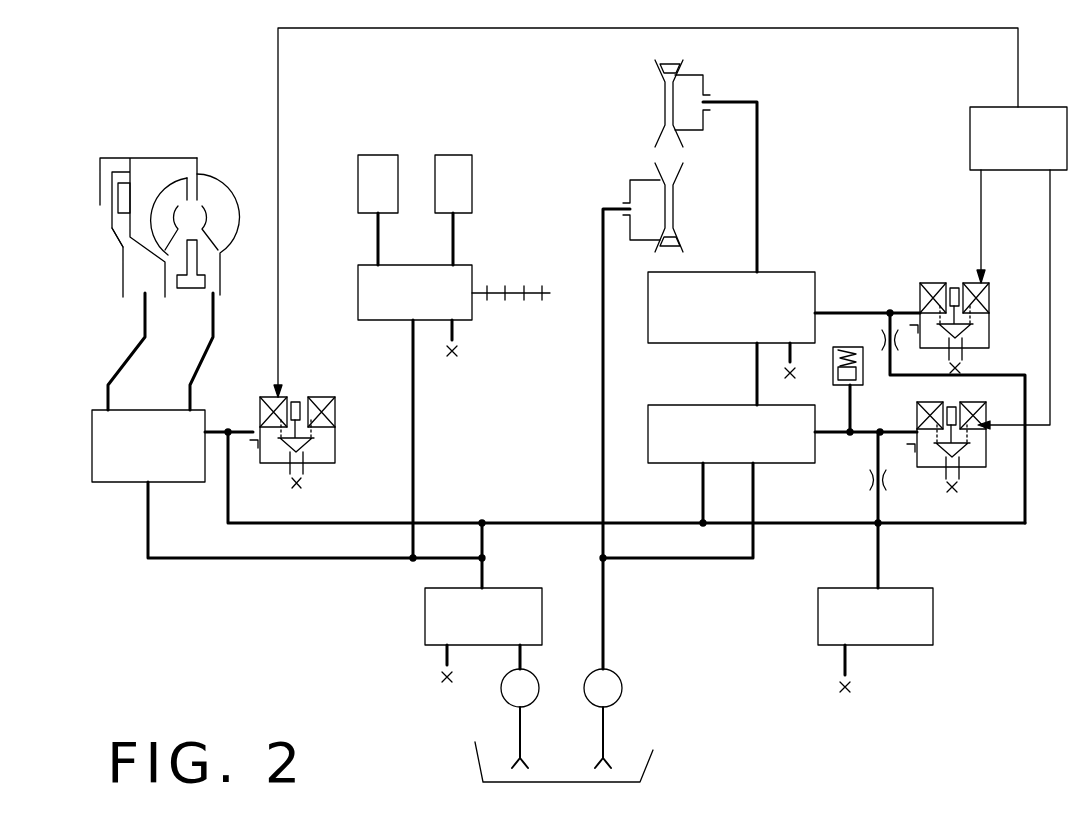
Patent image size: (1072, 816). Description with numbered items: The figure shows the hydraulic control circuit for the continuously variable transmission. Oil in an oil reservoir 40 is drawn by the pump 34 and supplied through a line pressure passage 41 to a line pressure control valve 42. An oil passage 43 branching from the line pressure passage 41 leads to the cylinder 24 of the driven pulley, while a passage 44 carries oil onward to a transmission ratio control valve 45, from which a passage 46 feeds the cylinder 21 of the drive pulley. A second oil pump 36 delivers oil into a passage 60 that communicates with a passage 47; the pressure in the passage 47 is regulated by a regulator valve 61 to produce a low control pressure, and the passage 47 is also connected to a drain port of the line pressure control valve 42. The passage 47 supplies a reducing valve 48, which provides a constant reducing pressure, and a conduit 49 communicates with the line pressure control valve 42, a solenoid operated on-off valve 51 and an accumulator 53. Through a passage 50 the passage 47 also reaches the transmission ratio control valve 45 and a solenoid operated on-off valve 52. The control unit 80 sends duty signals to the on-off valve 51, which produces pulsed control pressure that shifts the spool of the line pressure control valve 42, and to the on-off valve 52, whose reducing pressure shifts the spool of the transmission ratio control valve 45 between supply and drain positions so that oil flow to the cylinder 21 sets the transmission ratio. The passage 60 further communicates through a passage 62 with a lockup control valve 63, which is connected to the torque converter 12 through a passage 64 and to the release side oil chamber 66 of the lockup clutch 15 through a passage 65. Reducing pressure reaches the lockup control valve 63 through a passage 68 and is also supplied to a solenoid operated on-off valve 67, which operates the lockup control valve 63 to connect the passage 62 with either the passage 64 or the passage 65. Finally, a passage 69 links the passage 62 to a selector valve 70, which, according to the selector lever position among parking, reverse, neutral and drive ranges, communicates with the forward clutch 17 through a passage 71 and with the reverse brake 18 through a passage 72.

The torque converter 12 is at (230, 202).
The lockup clutch 15 is at (125, 183).
The forward clutch 17 is at (388, 155).
The reverse brake 18 is at (468, 155).
The cylinder 21 is at (703, 80).
The cylinder 24 is at (645, 195).
The pump 34 is at (620, 694).
The oil pump 36 is at (530, 704).
The oil reservoir 40 is at (653, 760).
The line pressure passage 41 is at (685, 560).
The line pressure control valve 42 is at (672, 405).
The oil passage 43 is at (600, 383).
The passage 44 is at (755, 376).
The transmission ratio control valve 45 is at (808, 272).
The passage 46 is at (759, 185).
The passage 47 is at (662, 522).
The reducing valve 48 is at (948, 578).
The conduit 49 is at (875, 505).
The passage 50 is at (1027, 466).
The solenoid operated on-off valve 51 is at (988, 417).
The solenoid operated on-off valve 52 is at (990, 296).
The accumulator 53 is at (866, 380).
The passage 60 is at (522, 658).
The regulator valve 61 is at (536, 588).
The passage 62 is at (258, 560).
The lockup control valve 63 is at (112, 484).
The passage 64 is at (212, 368).
The passage 65 is at (110, 380).
The release side oil chamber 66 is at (120, 222).
The solenoid operated on-off valve 67 is at (310, 395).
The passage 68 is at (365, 522).
The passage 69 is at (415, 422).
The selector valve 70 is at (358, 292).
The passage 71 is at (376, 242).
The passage 72 is at (451, 243).
The control unit 80 is at (972, 107).